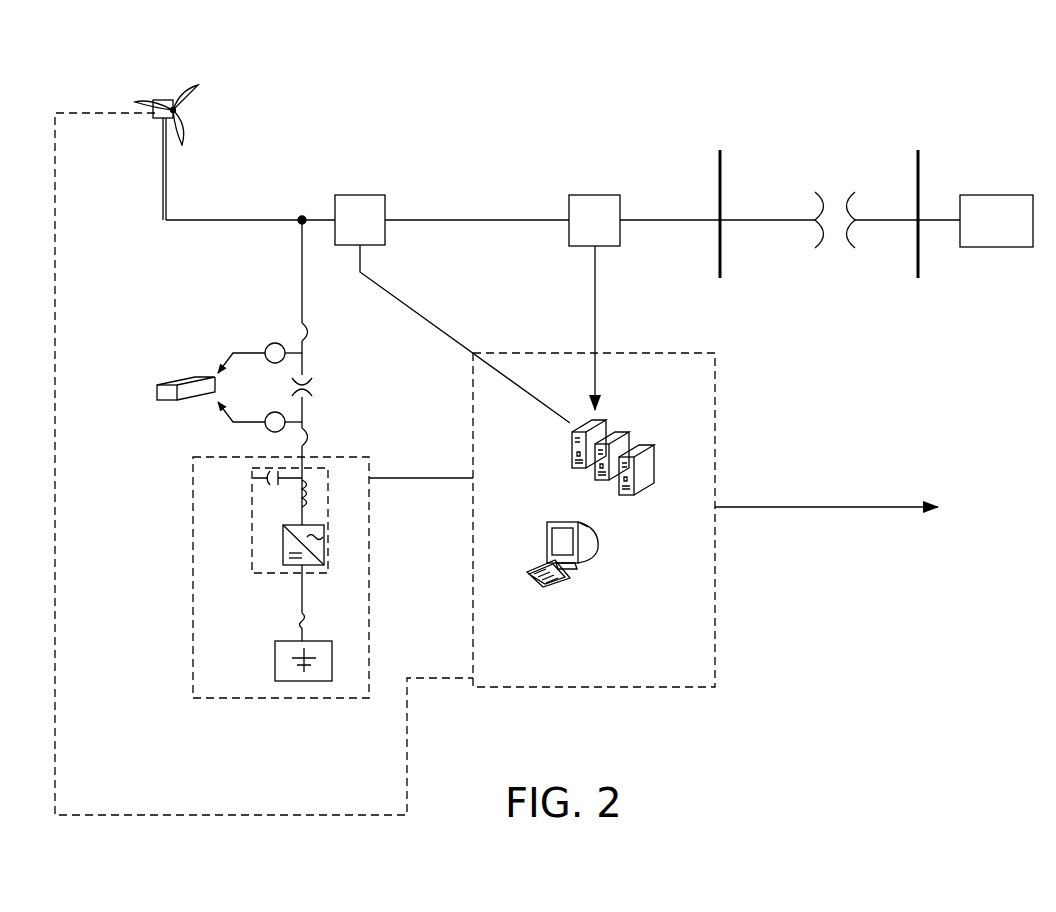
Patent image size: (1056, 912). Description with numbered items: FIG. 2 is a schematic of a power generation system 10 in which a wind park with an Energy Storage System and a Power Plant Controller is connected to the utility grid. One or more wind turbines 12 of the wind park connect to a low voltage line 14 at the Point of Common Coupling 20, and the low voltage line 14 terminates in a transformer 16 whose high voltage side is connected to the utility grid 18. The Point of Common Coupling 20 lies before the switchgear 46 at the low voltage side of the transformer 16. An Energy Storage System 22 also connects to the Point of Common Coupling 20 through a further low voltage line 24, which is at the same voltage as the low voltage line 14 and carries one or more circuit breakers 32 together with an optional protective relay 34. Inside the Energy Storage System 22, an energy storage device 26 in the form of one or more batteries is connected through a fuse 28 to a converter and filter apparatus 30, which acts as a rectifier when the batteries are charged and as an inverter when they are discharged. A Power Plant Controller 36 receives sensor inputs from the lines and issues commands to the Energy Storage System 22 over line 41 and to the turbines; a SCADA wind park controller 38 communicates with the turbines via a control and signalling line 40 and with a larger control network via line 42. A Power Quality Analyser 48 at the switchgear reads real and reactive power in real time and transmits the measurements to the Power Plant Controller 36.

The power generation system 10 is at (535, 160).
The wind turbine 12 is at (160, 82).
The low voltage line 14 is at (438, 218).
The transformer 16 is at (770, 218).
The utility grid 18 is at (998, 195).
The Point of Common Coupling 20 is at (305, 208).
The Energy Storage System 22 is at (172, 710).
The further low voltage line 24 is at (302, 300).
The energy storage device 26 is at (332, 655).
The fuse 28 is at (360, 617).
The converter and filter apparatus 30 is at (330, 557).
The circuit breaker 32 is at (350, 333).
The protective relay 34 is at (120, 350).
The Power Plant Controller 36 is at (642, 635).
The SCADA wind park controller 38 is at (715, 638).
The control and signalling line 40 is at (407, 760).
The line 41 is at (425, 480).
The line 42 is at (825, 505).
The switchgear 46 is at (697, 170).
The Power Quality Analyser 48 is at (362, 195).